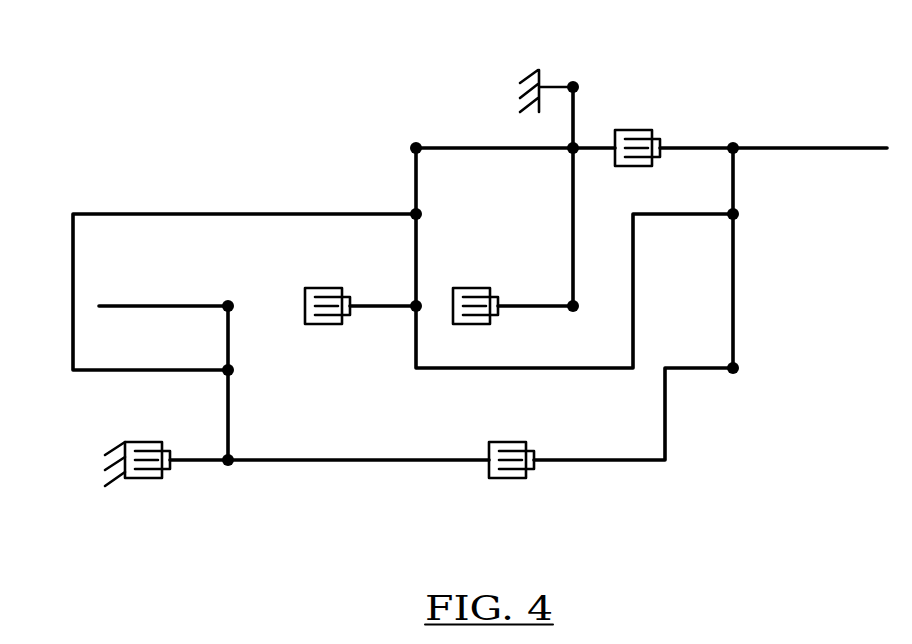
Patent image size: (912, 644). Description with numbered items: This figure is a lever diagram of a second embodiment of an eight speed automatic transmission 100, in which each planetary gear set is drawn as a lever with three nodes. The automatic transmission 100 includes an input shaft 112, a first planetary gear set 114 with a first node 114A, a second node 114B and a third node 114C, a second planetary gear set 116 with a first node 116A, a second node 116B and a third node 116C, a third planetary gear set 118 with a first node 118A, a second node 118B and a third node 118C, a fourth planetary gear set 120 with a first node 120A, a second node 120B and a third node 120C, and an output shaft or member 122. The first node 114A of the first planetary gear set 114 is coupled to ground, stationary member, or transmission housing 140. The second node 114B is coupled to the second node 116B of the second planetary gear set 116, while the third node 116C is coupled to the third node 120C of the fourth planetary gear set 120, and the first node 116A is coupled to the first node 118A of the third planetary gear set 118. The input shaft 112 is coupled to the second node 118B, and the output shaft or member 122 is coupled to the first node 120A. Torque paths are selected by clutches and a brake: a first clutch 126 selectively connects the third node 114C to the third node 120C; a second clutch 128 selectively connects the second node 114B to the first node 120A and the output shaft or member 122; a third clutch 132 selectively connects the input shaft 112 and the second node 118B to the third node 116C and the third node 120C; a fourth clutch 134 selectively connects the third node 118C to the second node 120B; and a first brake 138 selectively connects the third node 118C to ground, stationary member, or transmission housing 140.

The eight speed automatic transmission 100 is at (723, 92).
The input shaft 112 is at (168, 303).
The first planetary gear set 114 is at (595, 195).
The first node of the first planetary gear set 114A is at (580, 83).
The second node of the first planetary gear set 114B is at (567, 151).
The third node of the first planetary gear set 114C is at (580, 307).
The second planetary gear set 116 is at (390, 335).
The first node of the second planetary gear set 116A is at (410, 211).
The second node of the second planetary gear set 116B is at (410, 145).
The third node of the second planetary gear set 116C is at (422, 302).
The third planetary gear set 118 is at (197, 503).
The first node of the third planetary gear set 118A is at (235, 373).
The second node of the third planetary gear set 118B is at (228, 300).
The third node of the third planetary gear set 118C is at (235, 463).
The fourth planetary gear set 120 is at (755, 453).
The first node of the fourth planetary gear set 120A is at (740, 143).
The second node of the fourth planetary gear set 120B is at (740, 371).
The third node of the fourth planetary gear set 120C is at (740, 216).
The output shaft or member 122 is at (830, 153).
The first clutch 126 is at (478, 324).
The second clutch 128 is at (632, 168).
The third clutch 132 is at (315, 285).
The fourth clutch 134 is at (512, 482).
The first brake 138 is at (143, 480).
The ground, stationary member, or transmission housing 140 is at (538, 72).